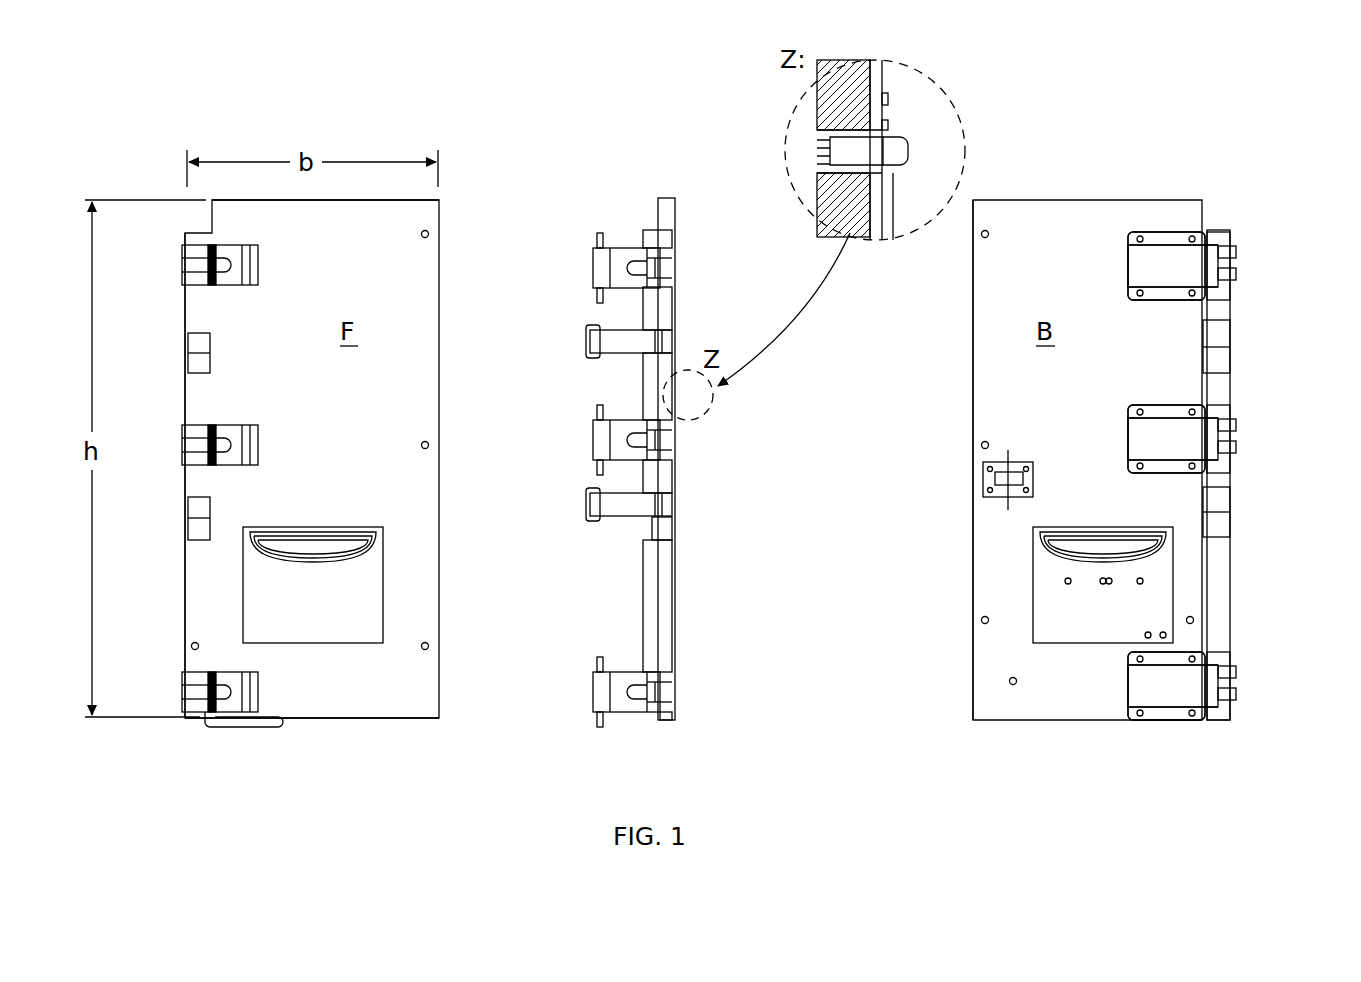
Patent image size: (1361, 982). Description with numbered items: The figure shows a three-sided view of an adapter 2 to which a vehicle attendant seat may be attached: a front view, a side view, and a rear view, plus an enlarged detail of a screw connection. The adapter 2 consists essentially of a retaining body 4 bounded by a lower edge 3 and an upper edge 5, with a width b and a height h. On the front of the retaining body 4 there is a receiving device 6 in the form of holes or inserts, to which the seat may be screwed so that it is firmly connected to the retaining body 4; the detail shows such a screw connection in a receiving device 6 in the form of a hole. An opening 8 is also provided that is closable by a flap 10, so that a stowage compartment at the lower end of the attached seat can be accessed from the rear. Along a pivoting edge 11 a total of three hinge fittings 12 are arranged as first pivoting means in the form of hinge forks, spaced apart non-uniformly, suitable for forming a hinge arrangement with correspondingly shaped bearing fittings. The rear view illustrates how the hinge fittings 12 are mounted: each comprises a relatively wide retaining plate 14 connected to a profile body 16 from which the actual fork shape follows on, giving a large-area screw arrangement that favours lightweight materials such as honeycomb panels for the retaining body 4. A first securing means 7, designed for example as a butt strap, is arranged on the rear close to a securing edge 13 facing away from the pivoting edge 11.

The adapter 2 is at (268, 148).
The lower edge 3 is at (352, 714).
The retaining body 4 is at (430, 326).
The upper edge 5 is at (341, 212).
The receiving device 6 is at (432, 235).
The first securing means 7 is at (983, 478).
The opening 8 is at (395, 560).
The flap 10 is at (329, 612).
The pivoting edge 11 is at (178, 300).
The hinge fittings 12 is at (240, 263).
The securing edge 13 is at (963, 411).
The retaining plate 14 is at (1165, 302).
The profile body 16 is at (1150, 268).